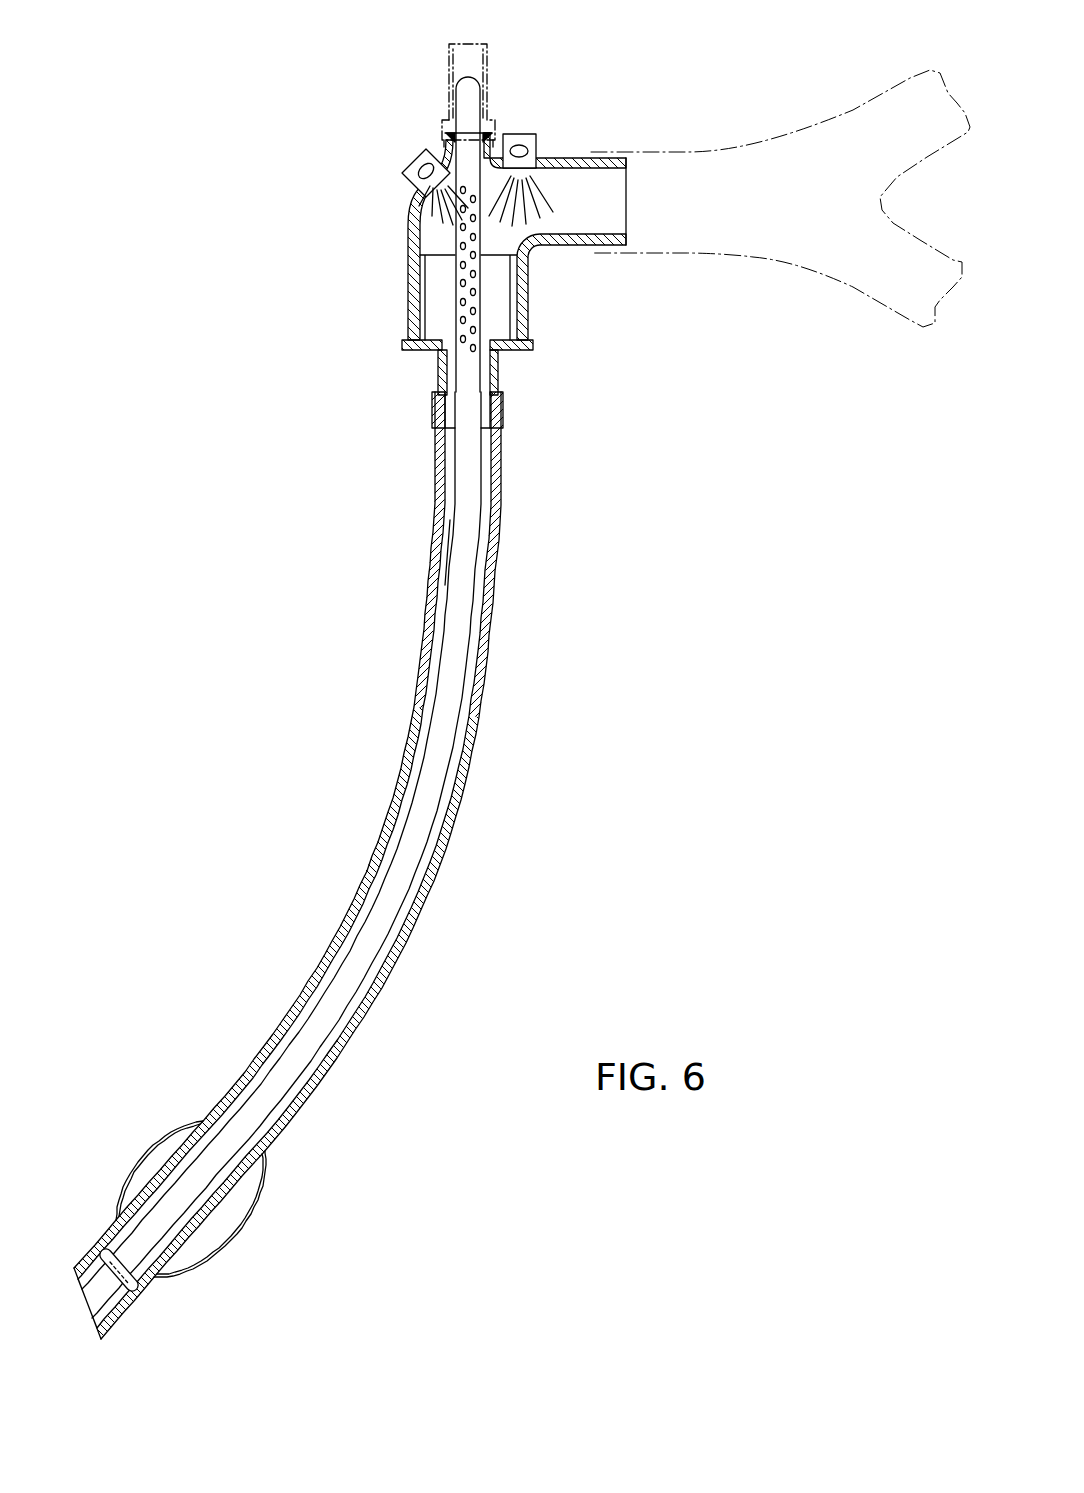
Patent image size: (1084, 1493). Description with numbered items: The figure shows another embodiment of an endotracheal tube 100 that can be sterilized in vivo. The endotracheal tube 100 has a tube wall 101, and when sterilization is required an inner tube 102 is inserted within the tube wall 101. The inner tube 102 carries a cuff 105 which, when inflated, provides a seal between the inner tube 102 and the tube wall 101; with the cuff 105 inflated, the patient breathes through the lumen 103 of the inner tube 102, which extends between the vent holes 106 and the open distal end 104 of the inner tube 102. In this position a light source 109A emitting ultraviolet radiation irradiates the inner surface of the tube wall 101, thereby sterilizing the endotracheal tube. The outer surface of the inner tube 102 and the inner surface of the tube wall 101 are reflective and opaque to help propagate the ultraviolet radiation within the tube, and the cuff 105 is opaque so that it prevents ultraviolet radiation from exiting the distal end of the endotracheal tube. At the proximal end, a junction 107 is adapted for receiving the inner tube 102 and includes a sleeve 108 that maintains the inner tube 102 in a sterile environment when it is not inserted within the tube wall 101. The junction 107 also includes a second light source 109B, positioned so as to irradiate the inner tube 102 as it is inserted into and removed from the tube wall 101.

The endotracheal tube 100 is at (260, 337).
The tube wall 101 is at (496, 578).
The inner tube 102 is at (455, 573).
The lumen 103 is at (457, 640).
The open distal end 104 is at (77, 1298).
The cuff 105 is at (138, 1290).
The vent holes 106 is at (476, 292).
The junction 107 is at (410, 244).
The sleeve 108 is at (488, 53).
The light source 109A is at (521, 134).
The light source 109B is at (410, 153).